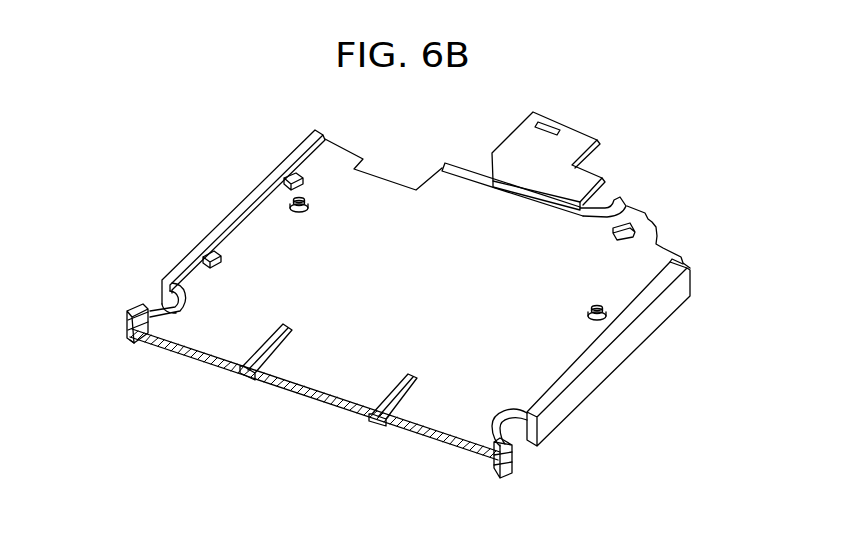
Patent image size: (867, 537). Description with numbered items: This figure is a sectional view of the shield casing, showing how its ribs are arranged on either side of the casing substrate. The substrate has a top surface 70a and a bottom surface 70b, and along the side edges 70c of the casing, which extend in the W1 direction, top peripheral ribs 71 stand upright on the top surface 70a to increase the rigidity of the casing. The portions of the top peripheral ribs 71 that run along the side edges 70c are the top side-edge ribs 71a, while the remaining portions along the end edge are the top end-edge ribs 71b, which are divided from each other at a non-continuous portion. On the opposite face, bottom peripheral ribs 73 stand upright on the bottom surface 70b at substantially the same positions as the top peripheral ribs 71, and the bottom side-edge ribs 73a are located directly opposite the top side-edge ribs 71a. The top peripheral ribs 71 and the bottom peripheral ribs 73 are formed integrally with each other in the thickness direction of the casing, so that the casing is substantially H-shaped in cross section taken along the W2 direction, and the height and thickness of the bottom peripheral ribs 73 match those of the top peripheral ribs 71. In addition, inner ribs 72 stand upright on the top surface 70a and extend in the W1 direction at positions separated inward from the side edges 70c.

The top surface 70a is at (382, 194).
The bottom surface 70b is at (308, 396).
The side edges 70c is at (236, 232).
The top peripheral ribs 71 is at (349, 289).
The top side-edge ribs 71a is at (137, 307).
The top end-edge ribs 71b is at (463, 166).
The inner ribs 72 is at (407, 373).
The bottom peripheral ribs 73 is at (320, 410).
The bottom side-edge ribs 73a is at (137, 347).